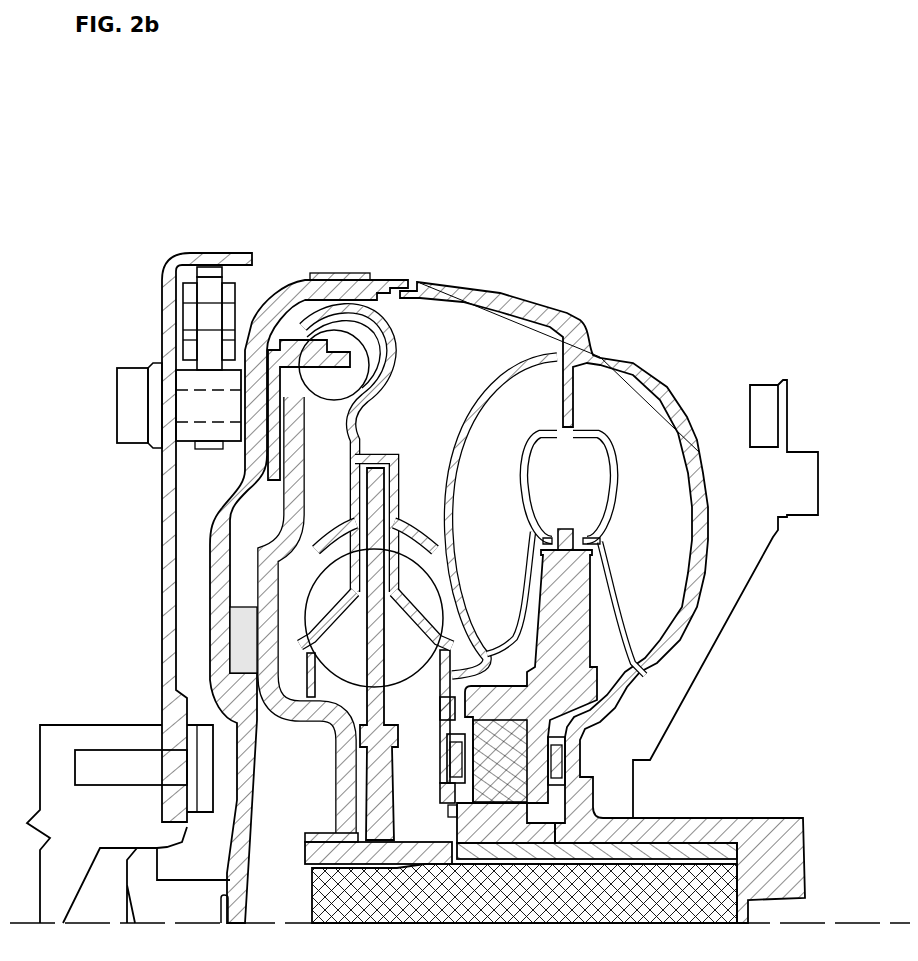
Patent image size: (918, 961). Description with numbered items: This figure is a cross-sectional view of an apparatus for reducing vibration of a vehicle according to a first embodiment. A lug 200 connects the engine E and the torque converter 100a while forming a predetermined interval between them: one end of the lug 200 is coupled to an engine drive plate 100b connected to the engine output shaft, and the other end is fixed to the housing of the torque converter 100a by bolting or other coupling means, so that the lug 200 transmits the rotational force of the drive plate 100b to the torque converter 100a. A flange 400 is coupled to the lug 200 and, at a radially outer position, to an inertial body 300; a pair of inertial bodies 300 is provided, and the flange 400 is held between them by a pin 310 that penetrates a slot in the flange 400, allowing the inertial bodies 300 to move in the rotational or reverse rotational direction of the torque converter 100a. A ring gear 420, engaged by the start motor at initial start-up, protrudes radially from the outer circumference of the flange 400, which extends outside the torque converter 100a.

The torque converter 100a is at (655, 360).
The engine drive plate 100b is at (163, 553).
The lug 200 is at (197, 405).
The inertial body 300 is at (247, 343).
The pin 310 is at (230, 313).
The flange 400 is at (205, 285).
The ring gear 420 is at (205, 267).
The engine E is at (60, 733).